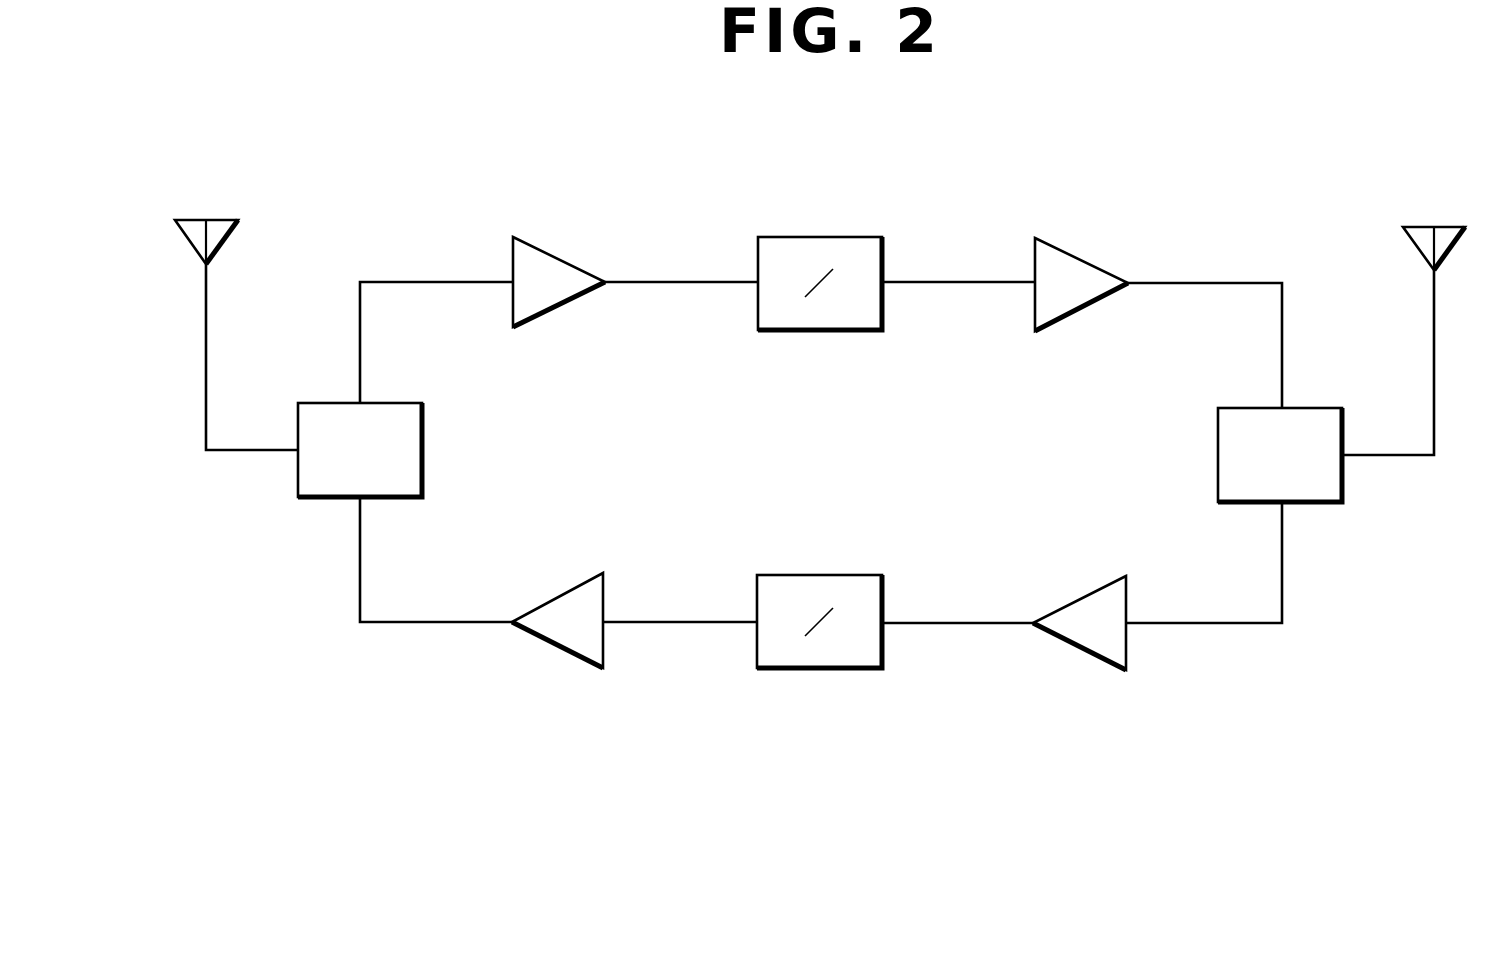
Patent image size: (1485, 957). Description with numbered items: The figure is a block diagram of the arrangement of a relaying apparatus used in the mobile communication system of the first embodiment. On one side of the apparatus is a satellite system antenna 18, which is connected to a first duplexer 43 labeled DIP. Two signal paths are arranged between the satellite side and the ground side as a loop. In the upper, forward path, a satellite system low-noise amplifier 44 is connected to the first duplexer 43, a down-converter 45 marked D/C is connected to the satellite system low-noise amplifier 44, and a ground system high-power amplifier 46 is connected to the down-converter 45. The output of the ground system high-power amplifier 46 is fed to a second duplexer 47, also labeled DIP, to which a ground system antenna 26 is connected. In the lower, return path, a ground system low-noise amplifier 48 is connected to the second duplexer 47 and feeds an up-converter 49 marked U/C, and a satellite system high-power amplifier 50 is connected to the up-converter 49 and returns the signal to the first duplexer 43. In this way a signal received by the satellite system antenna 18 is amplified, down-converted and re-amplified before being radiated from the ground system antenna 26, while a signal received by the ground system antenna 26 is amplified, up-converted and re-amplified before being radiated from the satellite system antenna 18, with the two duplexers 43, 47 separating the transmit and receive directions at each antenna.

The satellite system antenna 18 is at (206, 220).
The ground system antenna 26 is at (1434, 227).
The first duplexer 43 is at (423, 450).
The satellite system low-noise amplifier 44 is at (556, 259).
The down-converter 45 is at (818, 237).
The ground system high-power amplifier 46 is at (1076, 260).
The second duplexer 47 is at (1218, 454).
The ground system low-noise amplifier 48 is at (1077, 601).
The up-converter 49 is at (818, 575).
The satellite system high-power amplifier 50 is at (555, 597).